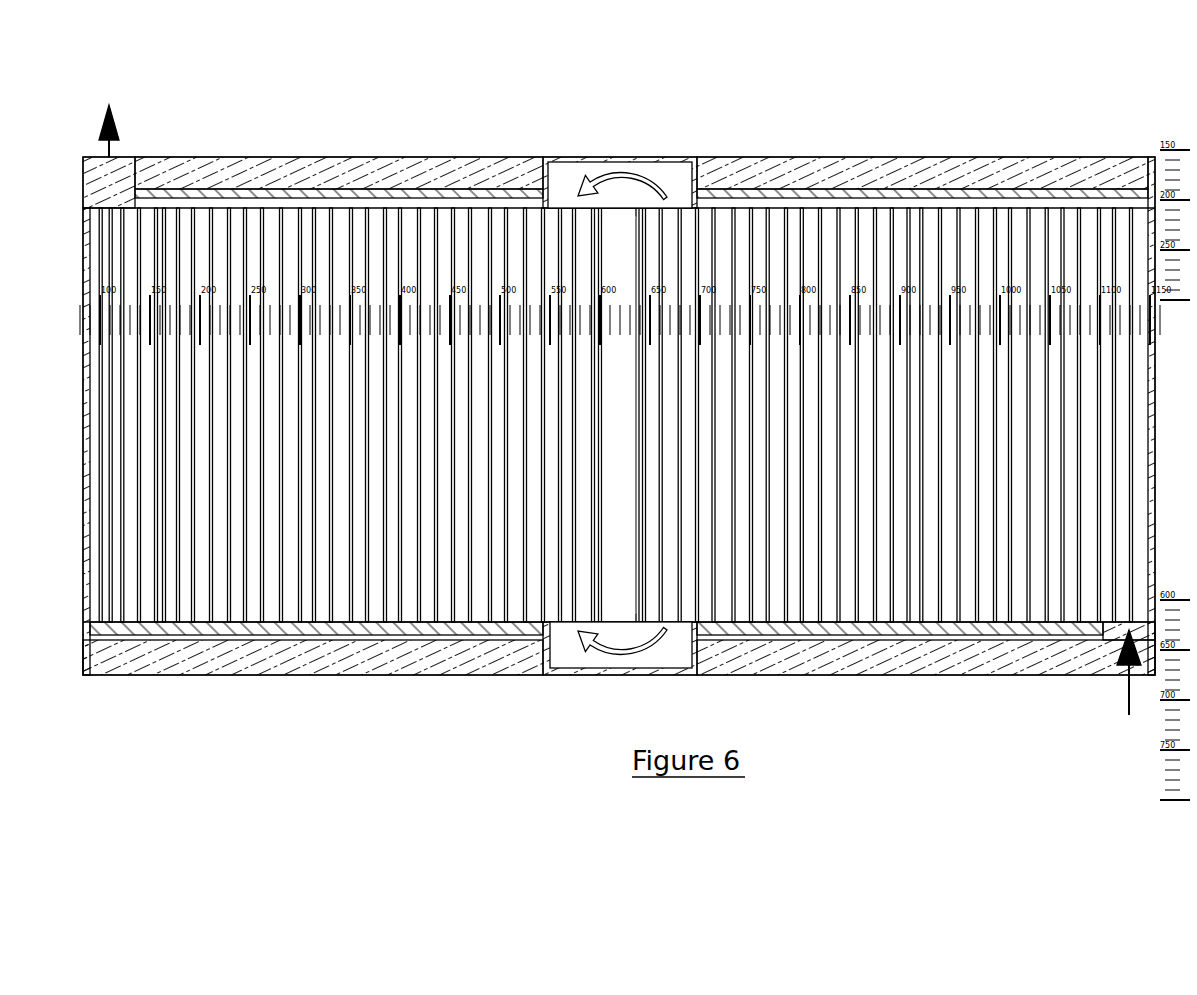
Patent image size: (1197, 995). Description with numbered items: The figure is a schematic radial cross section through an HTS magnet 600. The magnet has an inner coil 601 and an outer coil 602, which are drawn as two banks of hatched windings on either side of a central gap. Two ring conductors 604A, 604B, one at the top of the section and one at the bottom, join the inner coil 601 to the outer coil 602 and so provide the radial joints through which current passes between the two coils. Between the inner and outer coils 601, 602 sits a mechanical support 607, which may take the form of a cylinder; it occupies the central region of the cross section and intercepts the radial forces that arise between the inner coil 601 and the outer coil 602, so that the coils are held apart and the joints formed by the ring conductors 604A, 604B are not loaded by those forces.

The HTS magnet 600 is at (160, 108).
The inner coil 601 is at (990, 240).
The outer coil 602 is at (207, 565).
The ring conductor 604A is at (655, 178).
The ring conductor 604B is at (568, 657).
The mechanical support 607 is at (622, 235).